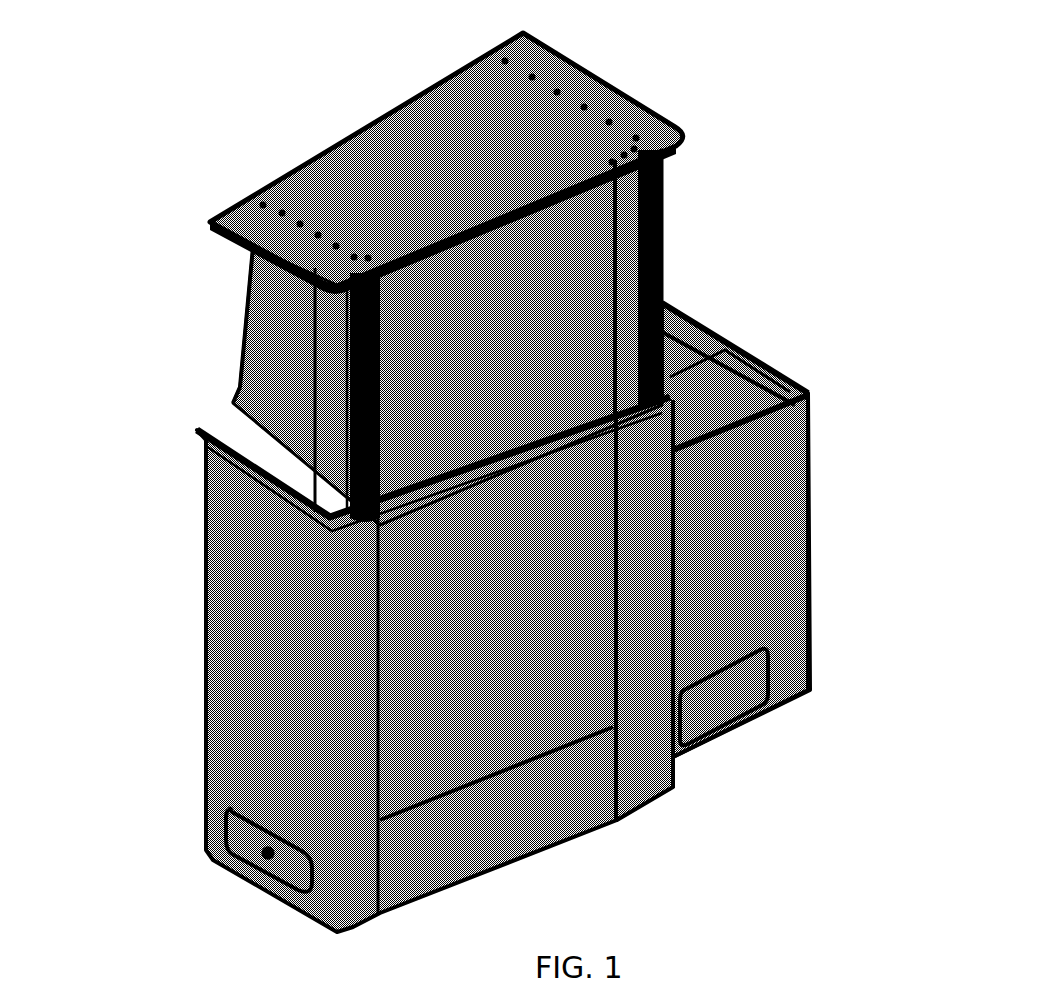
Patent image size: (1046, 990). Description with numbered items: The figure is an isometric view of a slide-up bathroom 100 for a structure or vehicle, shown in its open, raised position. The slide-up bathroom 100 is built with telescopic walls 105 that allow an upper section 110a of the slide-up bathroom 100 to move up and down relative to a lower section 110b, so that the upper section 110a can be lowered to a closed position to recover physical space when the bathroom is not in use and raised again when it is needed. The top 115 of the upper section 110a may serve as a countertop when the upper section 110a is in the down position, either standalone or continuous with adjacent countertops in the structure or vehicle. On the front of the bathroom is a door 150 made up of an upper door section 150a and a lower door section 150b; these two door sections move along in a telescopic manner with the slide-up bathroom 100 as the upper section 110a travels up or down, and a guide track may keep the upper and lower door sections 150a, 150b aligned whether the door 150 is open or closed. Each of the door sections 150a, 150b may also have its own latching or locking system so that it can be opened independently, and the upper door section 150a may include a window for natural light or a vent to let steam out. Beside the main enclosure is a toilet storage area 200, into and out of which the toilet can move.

The slide-up bathroom 100 is at (228, 116).
The telescopic walls 105 is at (238, 310).
The upper section 110a is at (176, 345).
The lower section 110b is at (176, 618).
The top 115 is at (446, 163).
The door 150 is at (578, 307).
The upper door section 150a is at (497, 335).
The lower door section 150b is at (496, 660).
The toilet storage area 200 is at (781, 458).